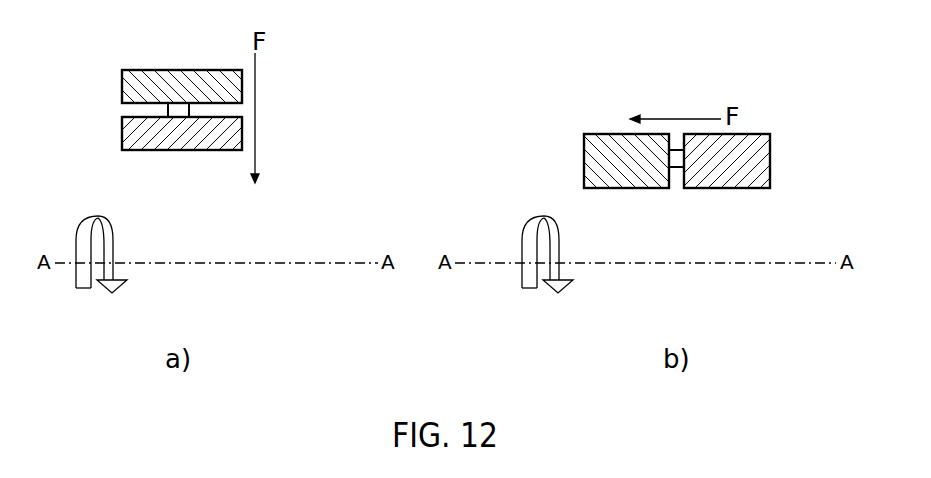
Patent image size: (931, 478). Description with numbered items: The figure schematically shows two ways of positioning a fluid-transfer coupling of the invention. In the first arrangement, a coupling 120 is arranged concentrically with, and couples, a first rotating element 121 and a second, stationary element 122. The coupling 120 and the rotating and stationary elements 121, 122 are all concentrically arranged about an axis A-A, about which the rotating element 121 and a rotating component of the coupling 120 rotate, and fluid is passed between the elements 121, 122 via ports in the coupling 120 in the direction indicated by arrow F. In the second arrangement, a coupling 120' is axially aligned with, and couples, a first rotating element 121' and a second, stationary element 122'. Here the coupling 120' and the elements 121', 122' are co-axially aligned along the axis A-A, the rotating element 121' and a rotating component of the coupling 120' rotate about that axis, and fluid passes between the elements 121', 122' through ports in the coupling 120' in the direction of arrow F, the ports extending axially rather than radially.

The coupling 120 is at (196, 70).
The first rotating element 121 is at (182, 168).
The second, stationary element 122 is at (172, 57).
The coupling 120' is at (670, 202).
The first rotating element 121' is at (607, 133).
The second, stationary element 122' is at (748, 189).